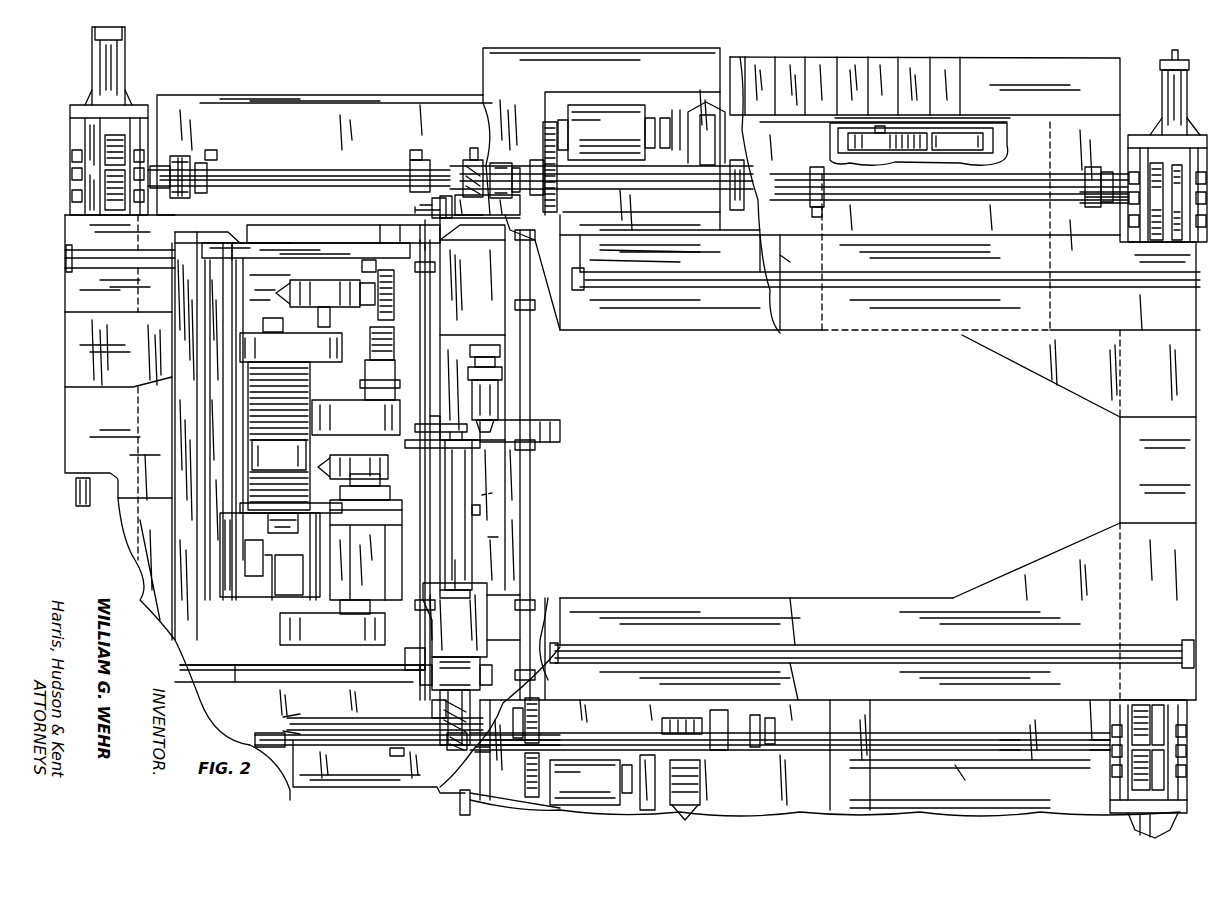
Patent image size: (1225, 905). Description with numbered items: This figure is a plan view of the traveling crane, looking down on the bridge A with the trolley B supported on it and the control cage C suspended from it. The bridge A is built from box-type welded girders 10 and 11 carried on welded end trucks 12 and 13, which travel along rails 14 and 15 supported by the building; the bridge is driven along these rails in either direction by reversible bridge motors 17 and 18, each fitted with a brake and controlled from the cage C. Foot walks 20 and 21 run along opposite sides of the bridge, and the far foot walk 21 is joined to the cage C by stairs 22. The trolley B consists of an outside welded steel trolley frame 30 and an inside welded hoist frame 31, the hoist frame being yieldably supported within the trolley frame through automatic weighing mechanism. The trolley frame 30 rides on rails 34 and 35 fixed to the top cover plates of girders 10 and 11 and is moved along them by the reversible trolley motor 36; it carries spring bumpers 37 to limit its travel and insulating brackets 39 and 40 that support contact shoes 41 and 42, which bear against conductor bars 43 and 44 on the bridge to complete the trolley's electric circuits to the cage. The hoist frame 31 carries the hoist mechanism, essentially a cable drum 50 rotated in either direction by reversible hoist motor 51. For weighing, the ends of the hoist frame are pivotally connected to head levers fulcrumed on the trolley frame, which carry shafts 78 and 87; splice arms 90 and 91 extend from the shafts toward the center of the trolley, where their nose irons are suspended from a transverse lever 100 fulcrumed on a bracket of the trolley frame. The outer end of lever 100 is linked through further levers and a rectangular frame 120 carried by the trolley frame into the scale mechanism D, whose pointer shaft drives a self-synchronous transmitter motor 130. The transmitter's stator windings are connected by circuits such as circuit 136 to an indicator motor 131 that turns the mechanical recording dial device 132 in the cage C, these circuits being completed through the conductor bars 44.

The girder 10 is at (703, 598).
The girder 11 is at (705, 322).
The end truck 12 is at (72, 358).
The end truck 13 is at (1135, 462).
The rail 14 is at (78, 483).
The rail 15 is at (1187, 100).
The bridge motor 17 is at (606, 738).
The bridge motor 18 is at (615, 120).
The foot walk 20 is at (955, 792).
The foot walk 21 is at (435, 100).
The stairs 22 is at (745, 72).
The trolley frame 30 is at (183, 416).
The hoist frame 31 is at (270, 285).
The rail 34 is at (752, 600).
The rail 35 is at (745, 325).
The trolley motor 36 is at (524, 382).
The spring bumper 37 is at (432, 206).
The bracket 39 is at (440, 708).
The bracket 40 is at (490, 178).
The contact shoe 41 is at (450, 748).
The contact shoe 42 is at (472, 163).
The conductor bar 43 is at (350, 745).
The conductor bar 44 is at (320, 165).
The cable drum 50 is at (240, 458).
The hoist motor 51 is at (345, 605).
The shaft 78 is at (330, 668).
The shaft 87 is at (315, 232).
The splice arm 90 is at (430, 592).
The splice arm 91 is at (438, 336).
The transverse lever 100 is at (452, 428).
The rectangular frame 120 is at (470, 568).
The self-synchronous motor 130 is at (500, 514).
The indicator motor 131 is at (872, 128).
The mechanical recording dial device 132 is at (836, 140).
The circuit 136 is at (1000, 140).
The bridge A is at (805, 320).
The trolley B is at (500, 537).
The control cage C is at (1000, 135).
The scale mechanism D is at (510, 492).